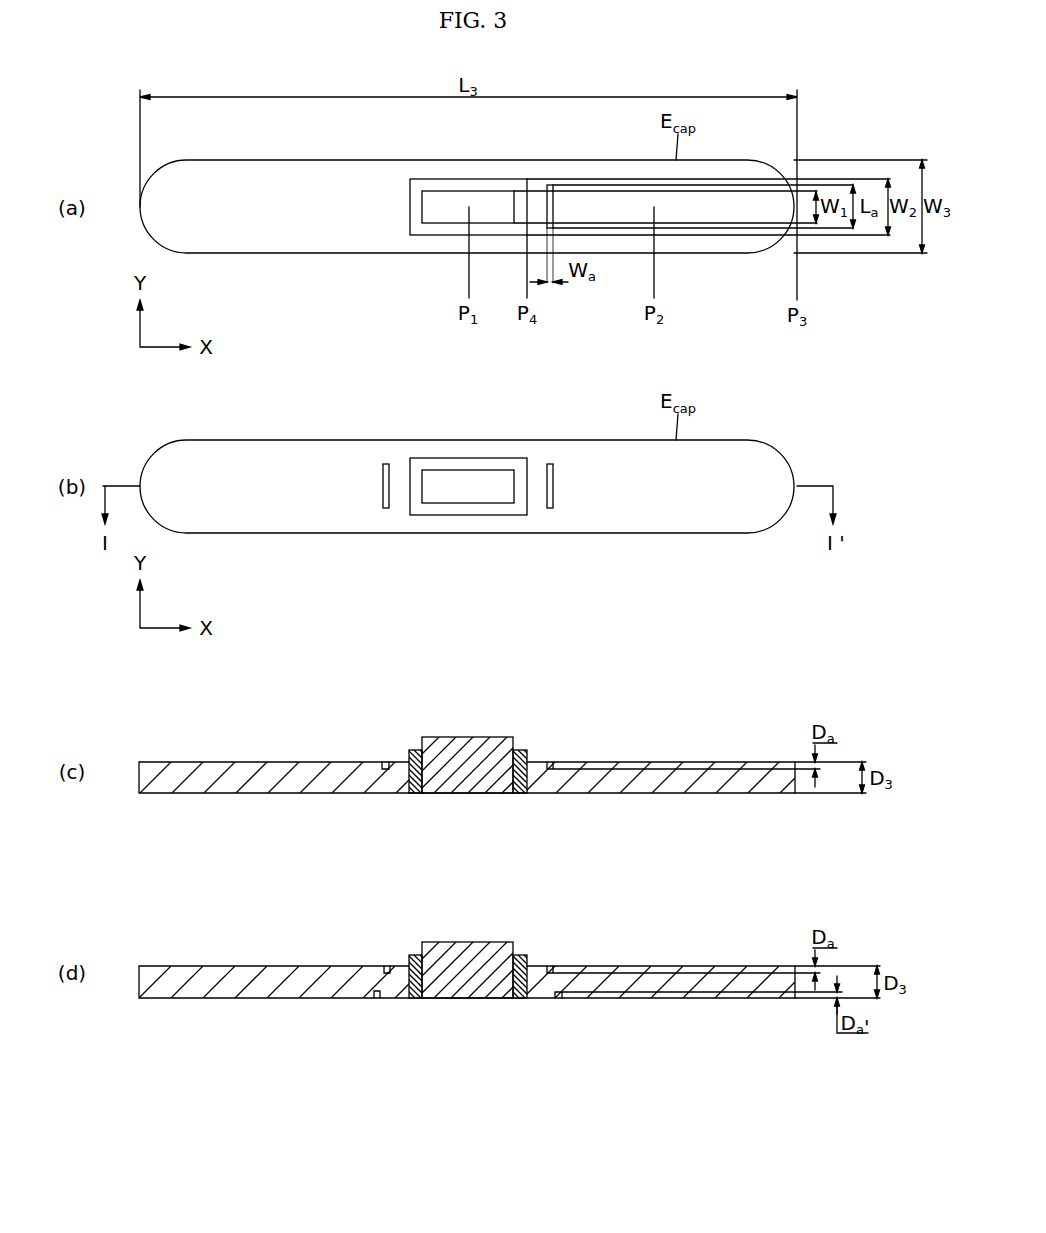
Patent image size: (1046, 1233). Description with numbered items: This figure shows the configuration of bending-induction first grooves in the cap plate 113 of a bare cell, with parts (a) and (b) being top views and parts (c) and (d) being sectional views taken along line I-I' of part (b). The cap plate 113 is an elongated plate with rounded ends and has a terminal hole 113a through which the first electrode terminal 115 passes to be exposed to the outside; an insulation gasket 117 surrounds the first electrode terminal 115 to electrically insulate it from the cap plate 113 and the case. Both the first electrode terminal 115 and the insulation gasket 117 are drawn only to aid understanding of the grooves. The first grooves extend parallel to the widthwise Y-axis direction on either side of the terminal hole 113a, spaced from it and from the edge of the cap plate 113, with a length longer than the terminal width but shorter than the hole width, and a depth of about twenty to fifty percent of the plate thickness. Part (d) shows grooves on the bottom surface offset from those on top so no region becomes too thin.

The cap plate 113 is at (250, 165).
The terminal hole 113a is at (427, 180).
The first electrode terminal 115 is at (468, 196).
The insulation gasket 117 is at (500, 180).